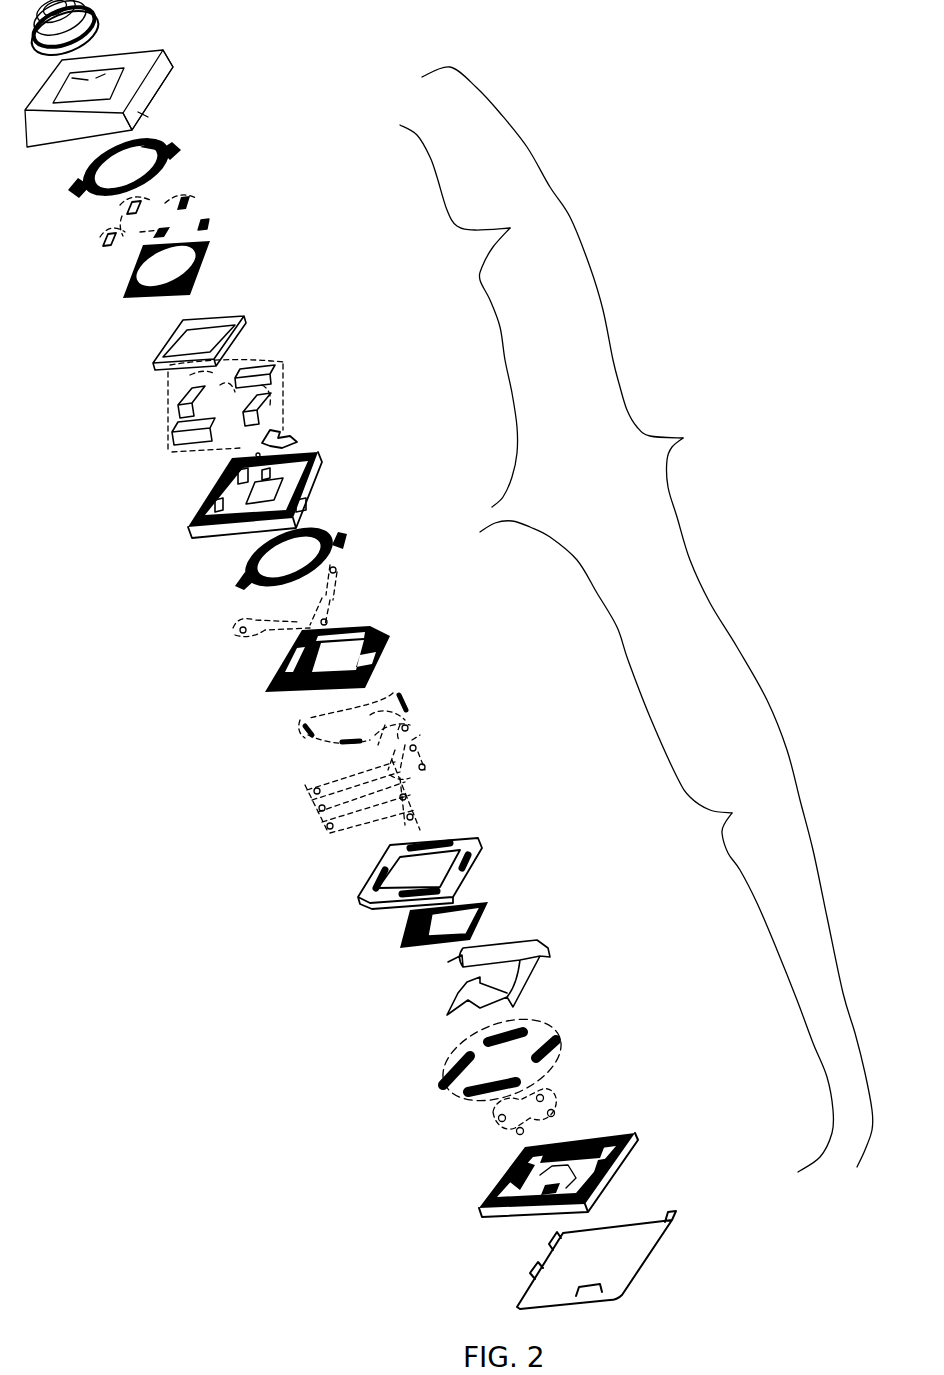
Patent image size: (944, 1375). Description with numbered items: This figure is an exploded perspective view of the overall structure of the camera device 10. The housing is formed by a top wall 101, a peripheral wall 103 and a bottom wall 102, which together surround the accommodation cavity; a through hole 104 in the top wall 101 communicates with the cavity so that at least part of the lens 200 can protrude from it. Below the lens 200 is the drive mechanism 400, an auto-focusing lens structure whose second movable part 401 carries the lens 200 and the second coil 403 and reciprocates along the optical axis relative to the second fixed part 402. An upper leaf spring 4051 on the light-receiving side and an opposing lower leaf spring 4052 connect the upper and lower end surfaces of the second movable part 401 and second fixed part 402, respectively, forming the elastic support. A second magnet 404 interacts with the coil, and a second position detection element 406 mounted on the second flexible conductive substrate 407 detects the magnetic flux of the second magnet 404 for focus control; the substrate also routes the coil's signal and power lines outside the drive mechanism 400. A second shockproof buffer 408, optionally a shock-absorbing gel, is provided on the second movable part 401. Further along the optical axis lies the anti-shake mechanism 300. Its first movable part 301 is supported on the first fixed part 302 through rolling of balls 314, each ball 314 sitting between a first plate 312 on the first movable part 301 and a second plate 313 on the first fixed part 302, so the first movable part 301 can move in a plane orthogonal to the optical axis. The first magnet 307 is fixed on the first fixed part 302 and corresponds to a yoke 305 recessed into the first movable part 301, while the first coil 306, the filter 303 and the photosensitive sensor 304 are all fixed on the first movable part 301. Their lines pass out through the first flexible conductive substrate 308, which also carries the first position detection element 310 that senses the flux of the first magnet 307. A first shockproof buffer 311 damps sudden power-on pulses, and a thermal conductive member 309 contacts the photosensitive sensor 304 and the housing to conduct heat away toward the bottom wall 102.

The camera device 10 is at (647, 617).
The drive mechanism 400 is at (482, 316).
The anti-shake mechanism 300 is at (657, 846).
The lens 200 is at (103, 17).
The top wall 101 is at (162, 50).
The peripheral wall 103 is at (132, 128).
The through hole 104 is at (167, 86).
The upper leaf spring 4051 is at (173, 143).
The second shockproof buffer 408 is at (192, 193).
The second position detection element 406 is at (206, 225).
The second movable part 401 is at (210, 267).
The second coil 403 is at (243, 320).
The second magnet 404 is at (277, 372).
The second flexible conductive substrate 407 is at (290, 433).
The second fixed part 402 is at (322, 473).
The lower leaf spring 4052 is at (343, 540).
The first shockproof buffer 311 is at (340, 570).
The first movable part 301 is at (375, 628).
The yoke 305 is at (407, 695).
The first plate 312 is at (410, 728).
The ball 314 is at (422, 745).
The second plate 313 is at (425, 783).
The first position detection element 310 is at (413, 833).
The first coil 306 is at (480, 842).
The filter 303 is at (445, 912).
The photosensitive sensor 304 is at (477, 923).
The first flexible conductive substrate 308 is at (527, 967).
The first magnet 307 is at (540, 1027).
The thermal conductive member 309 is at (555, 1105).
The first fixed part 302 is at (628, 1135).
The bottom wall 102 is at (670, 1222).